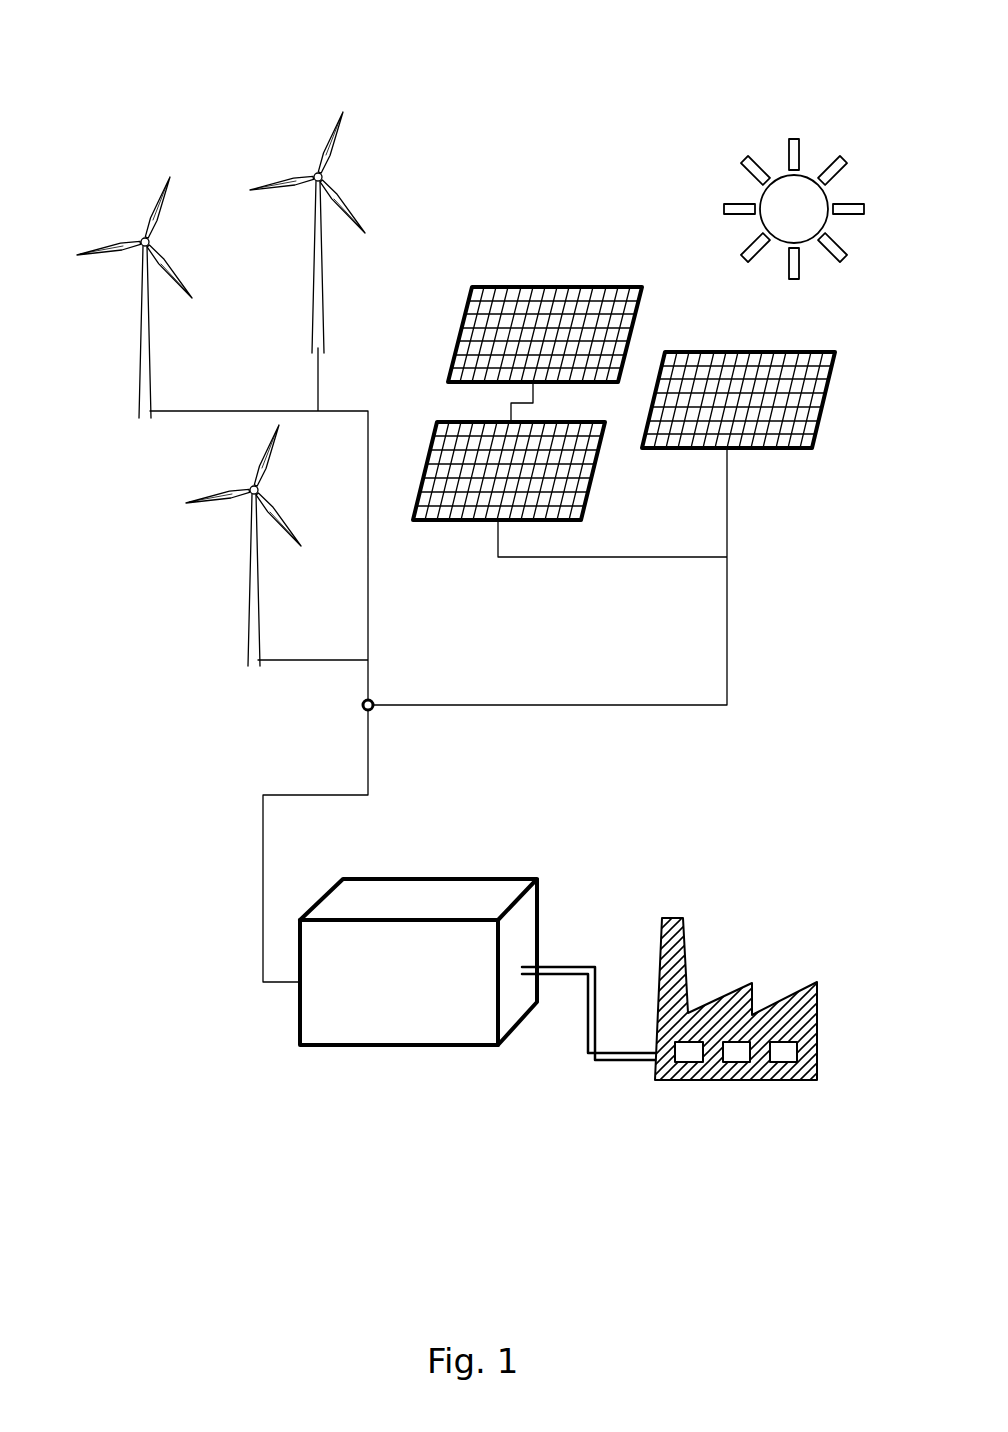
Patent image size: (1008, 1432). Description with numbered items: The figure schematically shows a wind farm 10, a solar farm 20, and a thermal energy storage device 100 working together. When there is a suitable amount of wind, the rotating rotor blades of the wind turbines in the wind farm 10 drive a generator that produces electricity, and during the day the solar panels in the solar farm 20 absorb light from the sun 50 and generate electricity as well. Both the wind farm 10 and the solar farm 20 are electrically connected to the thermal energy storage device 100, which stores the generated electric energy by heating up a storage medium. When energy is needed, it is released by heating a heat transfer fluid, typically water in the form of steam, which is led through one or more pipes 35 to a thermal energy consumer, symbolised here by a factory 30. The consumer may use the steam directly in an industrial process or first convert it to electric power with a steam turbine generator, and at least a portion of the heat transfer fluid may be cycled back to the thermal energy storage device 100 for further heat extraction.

The wind farm 10 is at (186, 84).
The solar farm 20 is at (597, 242).
The sun 50 is at (777, 172).
The thermal energy storage device 100 is at (440, 878).
The factory 30 is at (749, 984).
The pipe 35 is at (583, 1053).